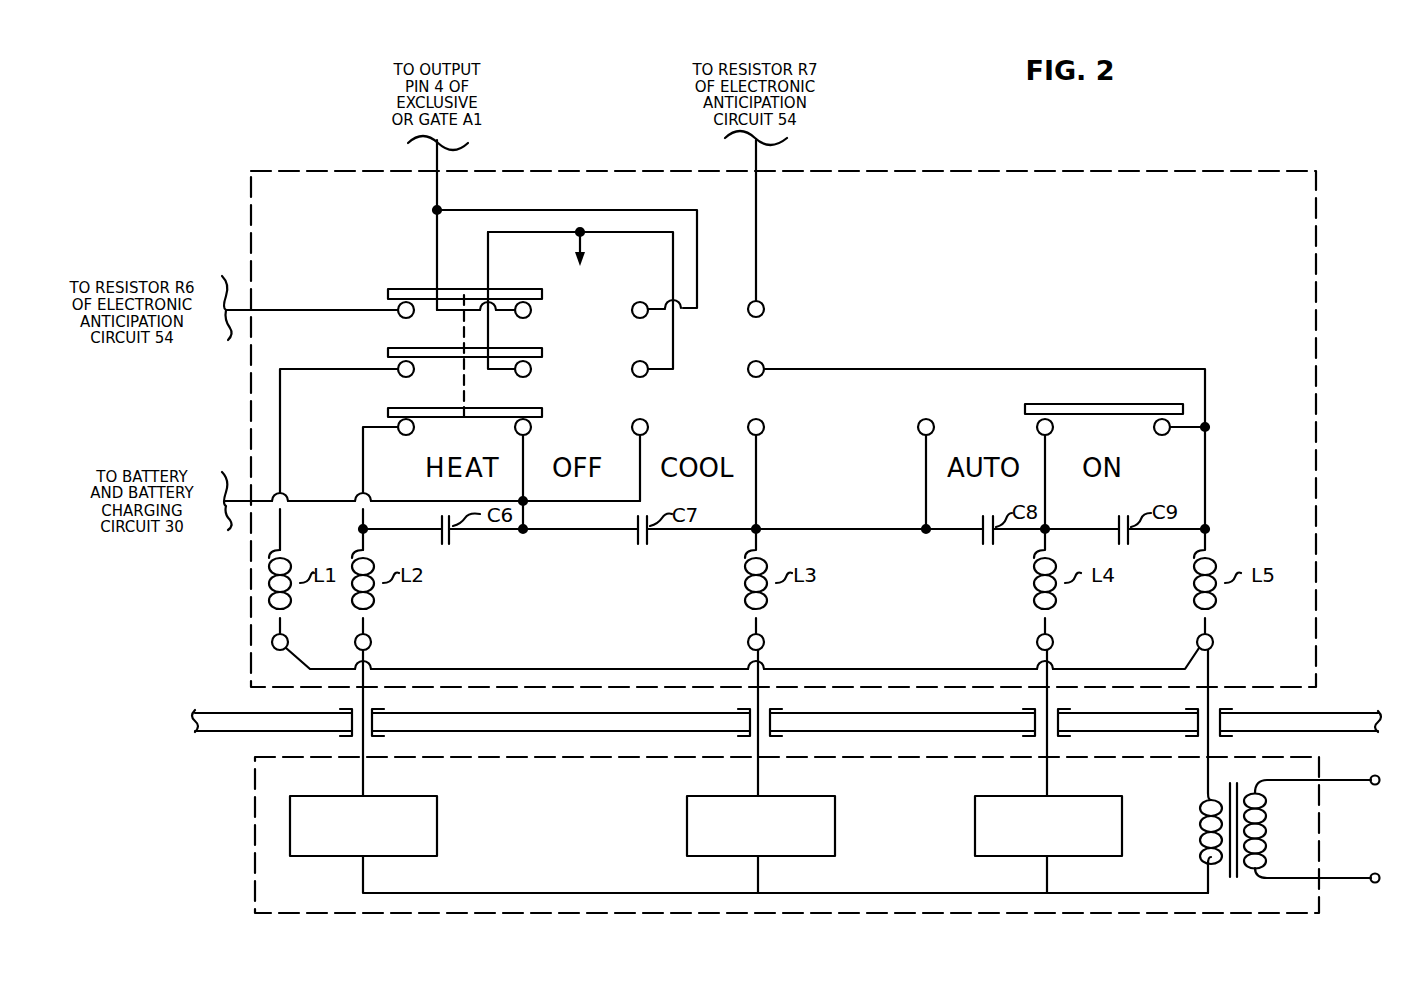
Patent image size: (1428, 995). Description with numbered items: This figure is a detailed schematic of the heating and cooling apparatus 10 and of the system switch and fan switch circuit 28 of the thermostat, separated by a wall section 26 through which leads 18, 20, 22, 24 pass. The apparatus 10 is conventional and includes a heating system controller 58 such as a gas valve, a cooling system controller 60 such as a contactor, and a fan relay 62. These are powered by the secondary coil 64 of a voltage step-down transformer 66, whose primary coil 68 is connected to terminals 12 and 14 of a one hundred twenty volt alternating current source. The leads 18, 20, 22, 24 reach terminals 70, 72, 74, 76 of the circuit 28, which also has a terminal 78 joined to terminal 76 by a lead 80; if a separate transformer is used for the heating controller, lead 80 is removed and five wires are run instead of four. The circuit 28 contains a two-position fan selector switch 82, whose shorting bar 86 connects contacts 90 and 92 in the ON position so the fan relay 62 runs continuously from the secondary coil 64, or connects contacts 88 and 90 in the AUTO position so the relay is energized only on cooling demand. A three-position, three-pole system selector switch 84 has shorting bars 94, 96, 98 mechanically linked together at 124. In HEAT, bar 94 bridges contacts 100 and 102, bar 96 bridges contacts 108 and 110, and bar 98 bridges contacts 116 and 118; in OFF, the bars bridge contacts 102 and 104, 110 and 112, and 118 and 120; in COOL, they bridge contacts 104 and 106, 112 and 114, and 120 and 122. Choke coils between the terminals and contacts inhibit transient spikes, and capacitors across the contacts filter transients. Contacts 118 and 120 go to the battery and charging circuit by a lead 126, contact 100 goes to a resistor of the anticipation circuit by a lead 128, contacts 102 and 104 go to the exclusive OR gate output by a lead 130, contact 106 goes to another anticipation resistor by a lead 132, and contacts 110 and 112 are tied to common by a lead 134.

The heating and cooling apparatus 10 is at (996, 919).
The terminal 12 is at (1375, 786).
The terminal 14 is at (1378, 872).
The lead 18 is at (368, 748).
The lead 20 is at (762, 748).
The lead 22 is at (1052, 748).
The lead 24 is at (1212, 746).
The wall section 26 is at (1325, 720).
The system switch and fan switch circuit 28 is at (984, 165).
The heating system controller 58 is at (437, 830).
The cooling system controller 60 is at (835, 830).
The fan relay 62 is at (1122, 830).
The secondary coil 64 is at (1200, 838).
The voltage step-down transformer 66 is at (1248, 882).
The primary coil 68 is at (1275, 820).
The terminal 70 is at (372, 640).
The terminal 72 is at (765, 640).
The terminal 74 is at (1054, 640).
The terminal 76 is at (1214, 640).
The terminal 78 is at (290, 640).
The lead 80 is at (542, 668).
The fan selector switch 82 is at (1117, 451).
The system selector switch 84 is at (519, 344).
The shorting bar 86 is at (1105, 411).
The contact 88 is at (918, 424).
The contact 90 is at (1053, 424).
The contact 92 is at (1152, 425).
The shorting bar 94 is at (425, 292).
The shorting bar 96 is at (442, 353).
The shorting bar 98 is at (442, 412).
The contact 100 is at (406, 317).
The contact 102 is at (533, 312).
The contact 104 is at (633, 310).
The contact 106 is at (758, 318).
The contact 108 is at (406, 376).
The contact 110 is at (533, 371).
The contact 112 is at (633, 368).
The contact 114 is at (758, 360).
The contact 116 is at (407, 442).
The contact 118 is at (533, 429).
The contact 120 is at (633, 426).
The contact 122 is at (765, 424).
The mechanical connection 124 is at (467, 368).
The lead 126 is at (319, 497).
The lead 128 is at (327, 307).
The lead 130 is at (440, 192).
The lead 132 is at (758, 190).
The lead 134 is at (489, 252).